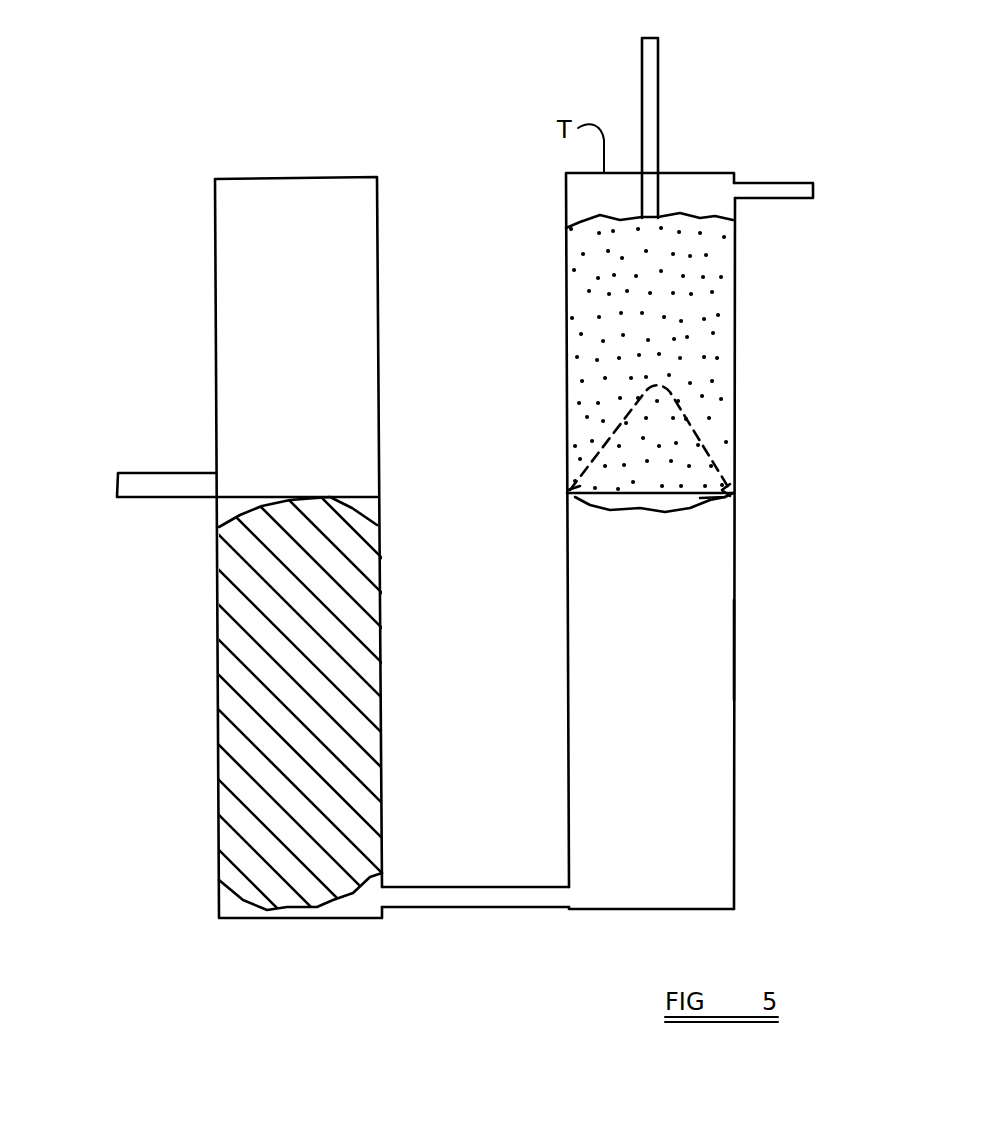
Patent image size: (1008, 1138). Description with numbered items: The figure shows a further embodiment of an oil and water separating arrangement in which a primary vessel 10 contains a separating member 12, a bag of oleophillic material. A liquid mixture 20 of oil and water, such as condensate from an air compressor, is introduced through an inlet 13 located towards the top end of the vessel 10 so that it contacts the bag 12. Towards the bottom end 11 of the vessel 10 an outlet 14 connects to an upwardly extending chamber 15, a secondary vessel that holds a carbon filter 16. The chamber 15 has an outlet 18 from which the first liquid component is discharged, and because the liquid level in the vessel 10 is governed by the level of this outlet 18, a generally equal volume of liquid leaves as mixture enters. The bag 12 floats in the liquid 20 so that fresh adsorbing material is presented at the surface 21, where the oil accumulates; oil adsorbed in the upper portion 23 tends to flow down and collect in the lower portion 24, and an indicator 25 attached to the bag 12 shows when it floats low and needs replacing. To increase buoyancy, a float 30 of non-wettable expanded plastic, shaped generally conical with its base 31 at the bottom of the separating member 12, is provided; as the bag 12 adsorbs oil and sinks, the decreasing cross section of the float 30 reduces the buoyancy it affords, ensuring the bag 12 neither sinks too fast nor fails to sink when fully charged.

The primary vessel 10 is at (753, 162).
The bottom end 11 is at (702, 909).
The separating member 12 is at (704, 363).
The inlet 13 is at (796, 193).
The outlet 14 is at (512, 909).
The chamber 15 is at (208, 200).
The filter 16 is at (282, 684).
The outlet 18 is at (115, 491).
The liquid mixture 20 is at (692, 643).
The surface 21 is at (705, 508).
The upper portion 23 is at (717, 254).
The lower portion 24 is at (582, 447).
The indicator 25 is at (655, 83).
The float 30 is at (710, 450).
The base 31 is at (632, 512).